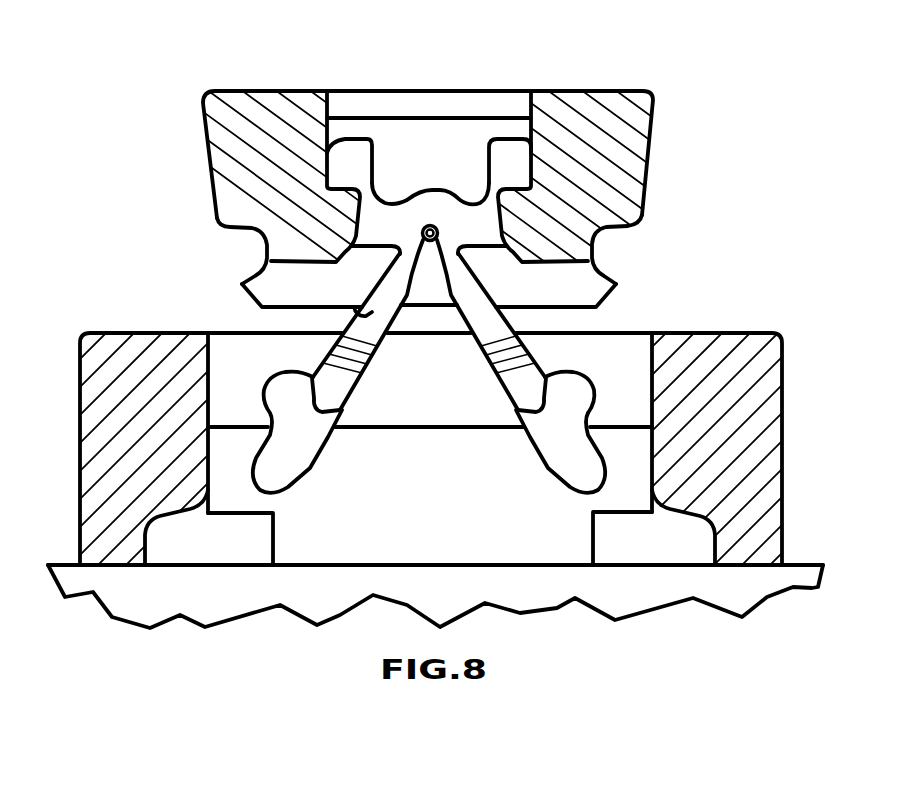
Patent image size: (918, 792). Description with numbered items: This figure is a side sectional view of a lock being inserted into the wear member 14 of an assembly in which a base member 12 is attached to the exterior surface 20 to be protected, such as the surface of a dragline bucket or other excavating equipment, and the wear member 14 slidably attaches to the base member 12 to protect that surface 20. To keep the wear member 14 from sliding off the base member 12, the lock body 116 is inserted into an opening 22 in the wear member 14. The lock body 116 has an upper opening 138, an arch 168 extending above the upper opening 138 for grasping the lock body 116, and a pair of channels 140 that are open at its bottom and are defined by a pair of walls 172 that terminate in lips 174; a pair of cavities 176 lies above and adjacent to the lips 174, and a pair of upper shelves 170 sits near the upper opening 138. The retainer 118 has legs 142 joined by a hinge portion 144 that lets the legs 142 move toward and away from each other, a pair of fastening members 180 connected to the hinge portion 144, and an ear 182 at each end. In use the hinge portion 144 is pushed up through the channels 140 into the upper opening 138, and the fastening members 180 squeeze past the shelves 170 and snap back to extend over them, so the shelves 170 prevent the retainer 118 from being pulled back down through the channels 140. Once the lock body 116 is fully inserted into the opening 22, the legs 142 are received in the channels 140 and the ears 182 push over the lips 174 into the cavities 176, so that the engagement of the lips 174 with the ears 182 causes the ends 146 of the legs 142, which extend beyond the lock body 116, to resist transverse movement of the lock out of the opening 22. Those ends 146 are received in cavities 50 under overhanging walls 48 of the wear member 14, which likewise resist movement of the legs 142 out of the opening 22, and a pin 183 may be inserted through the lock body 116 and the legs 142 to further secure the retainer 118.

The base member 12 is at (450, 505).
The wear member 14 is at (87, 413).
The surface 20 is at (807, 563).
The opening 22 is at (628, 353).
The overhanging walls 48 is at (180, 510).
The cavities 50 is at (177, 540).
The lock body 116 is at (638, 167).
The retainer 118 is at (387, 213).
The upper opening 138 is at (456, 128).
The channels 140 is at (521, 325).
The legs 142 is at (478, 340).
The hinge portion 144 is at (428, 213).
The ends 146 is at (580, 472).
The arch 168 is at (360, 105).
The upper shelves 170 is at (525, 206).
The walls 172 is at (295, 295).
The lips 174 is at (242, 283).
The cavities 176 is at (250, 250).
The fastening members 180 is at (507, 148).
The ears 182 is at (292, 395).
The pin 183 is at (438, 240).